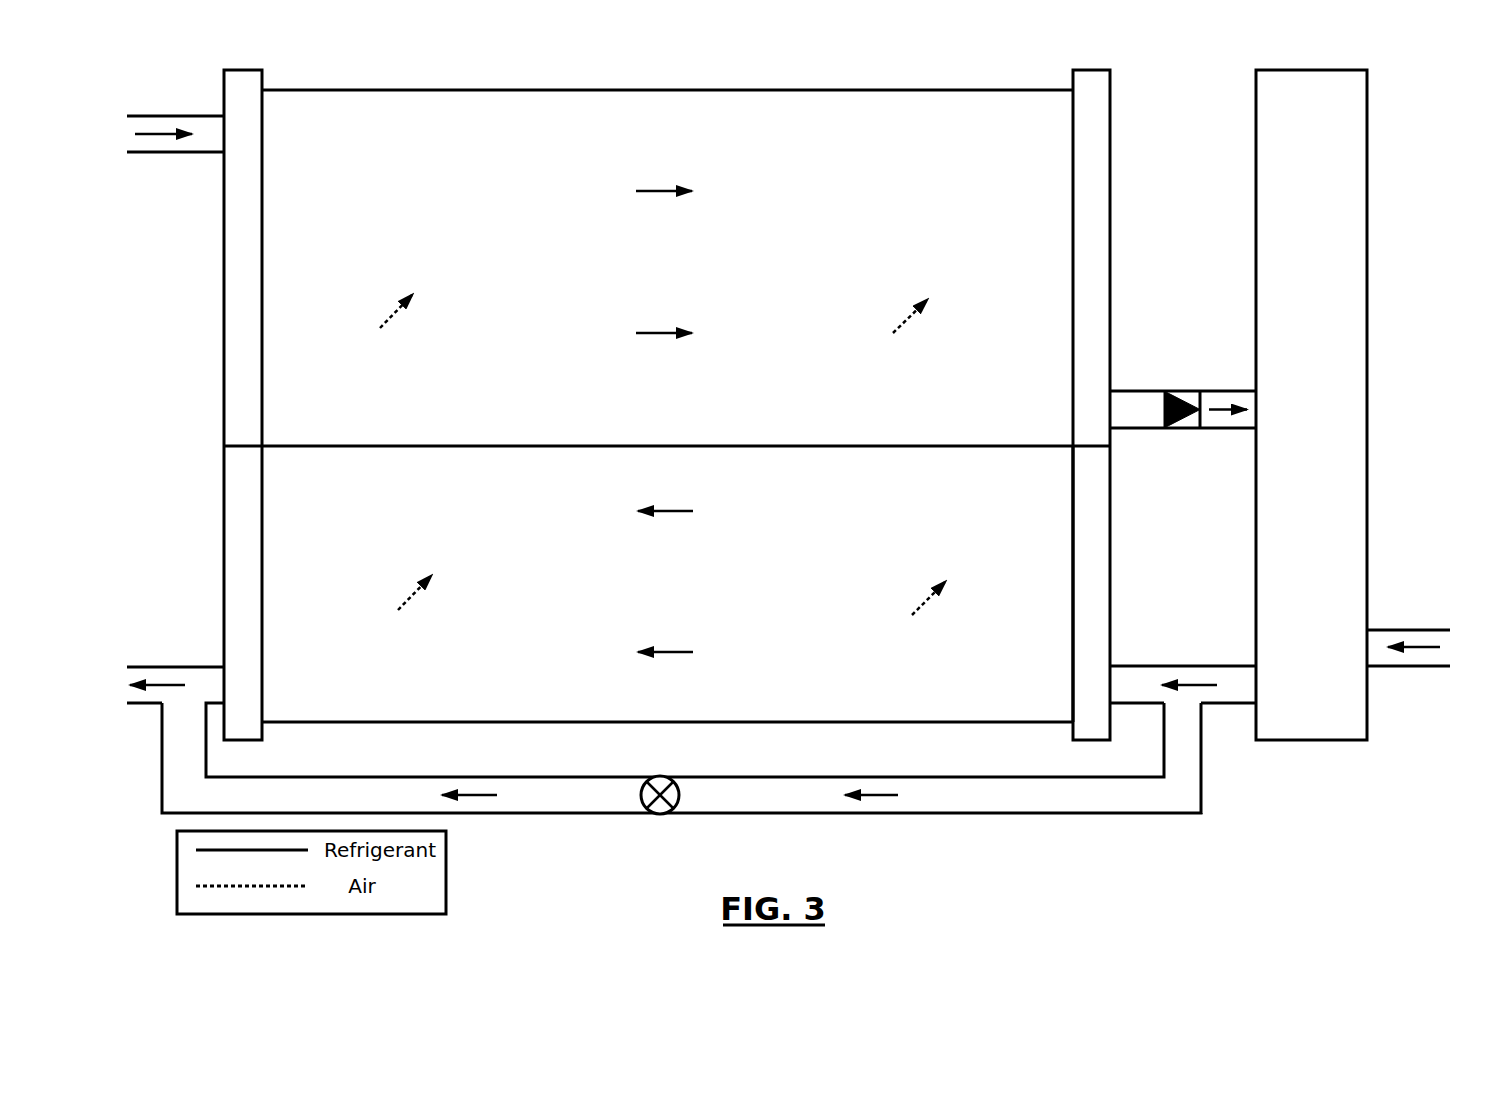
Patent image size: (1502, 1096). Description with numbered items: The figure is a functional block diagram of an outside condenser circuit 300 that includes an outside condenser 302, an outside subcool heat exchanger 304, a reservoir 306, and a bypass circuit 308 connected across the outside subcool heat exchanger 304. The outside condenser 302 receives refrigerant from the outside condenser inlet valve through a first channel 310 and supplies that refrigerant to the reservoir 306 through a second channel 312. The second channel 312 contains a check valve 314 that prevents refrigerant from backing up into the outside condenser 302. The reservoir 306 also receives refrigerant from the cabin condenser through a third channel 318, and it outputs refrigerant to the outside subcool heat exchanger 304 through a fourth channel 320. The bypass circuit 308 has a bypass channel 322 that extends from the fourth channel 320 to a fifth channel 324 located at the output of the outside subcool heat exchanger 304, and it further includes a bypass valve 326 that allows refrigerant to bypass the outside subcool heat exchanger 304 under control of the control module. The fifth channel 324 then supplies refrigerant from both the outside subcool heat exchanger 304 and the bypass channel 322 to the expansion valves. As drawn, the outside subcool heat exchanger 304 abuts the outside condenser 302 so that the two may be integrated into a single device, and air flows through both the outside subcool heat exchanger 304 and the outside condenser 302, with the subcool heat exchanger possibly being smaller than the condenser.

The outside condenser circuit 300 is at (286, 50).
The outside condenser 302 is at (1110, 113).
The outside subcool heat exchanger 304 is at (1110, 490).
The reservoir 306 is at (1367, 94).
The bypass circuit 308 is at (1212, 851).
The first channel 310 is at (166, 114).
The second channel 312 is at (1176, 390).
The check valve 314 is at (1184, 412).
The third channel 318 is at (1397, 668).
The fourth channel 320 is at (1178, 666).
The bypass channel 322 is at (1068, 815).
The fifth channel 324 is at (156, 706).
The bypass valve 326 is at (672, 812).